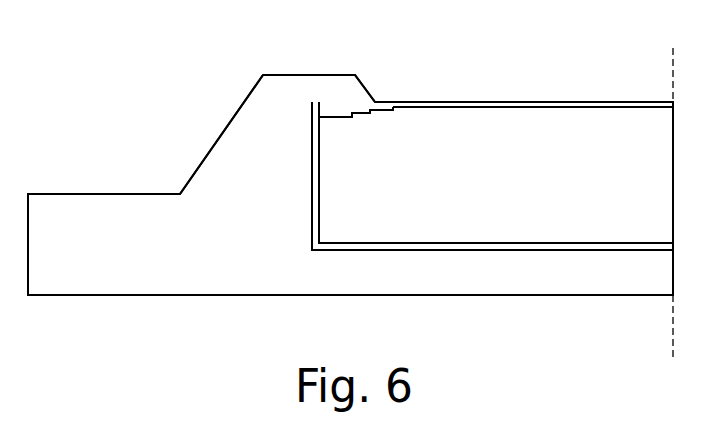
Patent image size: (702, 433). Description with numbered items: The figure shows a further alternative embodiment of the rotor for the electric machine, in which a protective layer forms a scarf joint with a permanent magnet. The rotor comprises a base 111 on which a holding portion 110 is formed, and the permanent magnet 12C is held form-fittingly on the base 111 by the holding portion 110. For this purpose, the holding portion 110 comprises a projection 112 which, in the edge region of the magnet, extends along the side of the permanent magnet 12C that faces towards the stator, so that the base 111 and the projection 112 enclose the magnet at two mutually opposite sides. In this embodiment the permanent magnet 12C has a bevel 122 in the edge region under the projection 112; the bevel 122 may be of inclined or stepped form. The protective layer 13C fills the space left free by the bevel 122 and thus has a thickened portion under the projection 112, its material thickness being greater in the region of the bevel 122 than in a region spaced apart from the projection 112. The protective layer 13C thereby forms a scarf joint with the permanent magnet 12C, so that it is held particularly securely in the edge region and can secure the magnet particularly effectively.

The holding portion 110 is at (245, 140).
The base 111 is at (137, 263).
The projection 112 is at (325, 92).
The bevel 122 is at (338, 118).
The protective layer 13C is at (513, 100).
The permanent magnet 12C is at (630, 173).